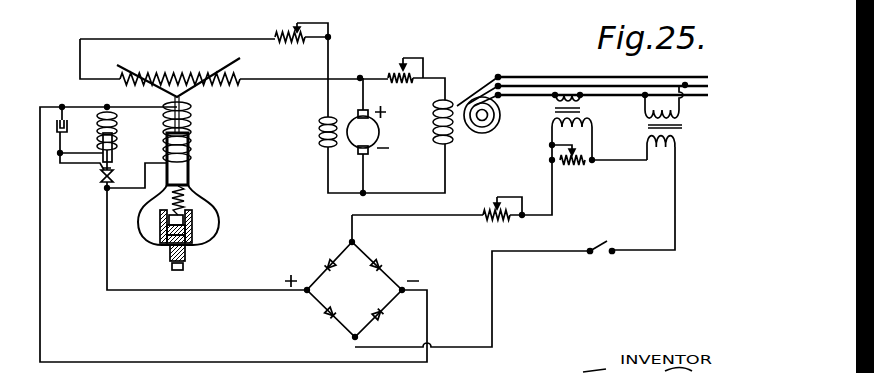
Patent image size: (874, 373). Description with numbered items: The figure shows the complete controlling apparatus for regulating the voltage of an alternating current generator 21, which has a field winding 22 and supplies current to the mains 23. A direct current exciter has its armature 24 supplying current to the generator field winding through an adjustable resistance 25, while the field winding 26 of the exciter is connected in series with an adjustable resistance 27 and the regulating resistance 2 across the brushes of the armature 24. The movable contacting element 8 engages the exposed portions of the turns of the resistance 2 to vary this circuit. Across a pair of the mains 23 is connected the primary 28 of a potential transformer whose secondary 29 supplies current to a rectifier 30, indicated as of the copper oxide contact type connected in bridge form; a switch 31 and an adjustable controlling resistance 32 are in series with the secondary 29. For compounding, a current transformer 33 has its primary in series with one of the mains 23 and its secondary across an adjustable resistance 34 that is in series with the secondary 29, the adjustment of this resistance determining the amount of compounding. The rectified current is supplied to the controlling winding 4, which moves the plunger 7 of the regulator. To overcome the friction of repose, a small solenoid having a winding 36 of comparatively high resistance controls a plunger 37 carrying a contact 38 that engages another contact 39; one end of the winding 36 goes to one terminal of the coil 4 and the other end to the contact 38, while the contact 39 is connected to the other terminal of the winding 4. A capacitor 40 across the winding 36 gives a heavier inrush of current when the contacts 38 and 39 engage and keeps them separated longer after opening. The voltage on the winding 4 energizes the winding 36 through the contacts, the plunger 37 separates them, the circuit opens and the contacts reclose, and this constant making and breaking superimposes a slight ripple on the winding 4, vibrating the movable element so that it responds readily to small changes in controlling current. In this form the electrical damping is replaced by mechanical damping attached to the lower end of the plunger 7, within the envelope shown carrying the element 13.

The regulating resistance 2 is at (203, 76).
The controlling winding 4 is at (192, 123).
The plunger 7 is at (183, 172).
The movable contacting element 8 is at (185, 96).
The filament 13 is at (187, 196).
The generator 21 is at (483, 133).
The field winding 22 is at (438, 138).
The mains 23 is at (583, 76).
The armature 24 is at (363, 132).
The adjustable resistance 25 is at (398, 85).
The field winding 26 is at (320, 138).
The adjustable resistance 27 is at (293, 25).
The primary 28 is at (684, 108).
The secondary 29 is at (663, 152).
The rectifier 30 is at (354, 289).
The switch 31 is at (600, 246).
The adjustable controlling resistance 32 is at (502, 222).
The current transformer 33 is at (553, 113).
The adjustable resistance 34 is at (573, 167).
The winding 36 is at (117, 116).
The plunger 37 is at (112, 158).
The contact 38 is at (103, 177).
The contact 39 is at (106, 181).
The capacitor 40 is at (74, 125).